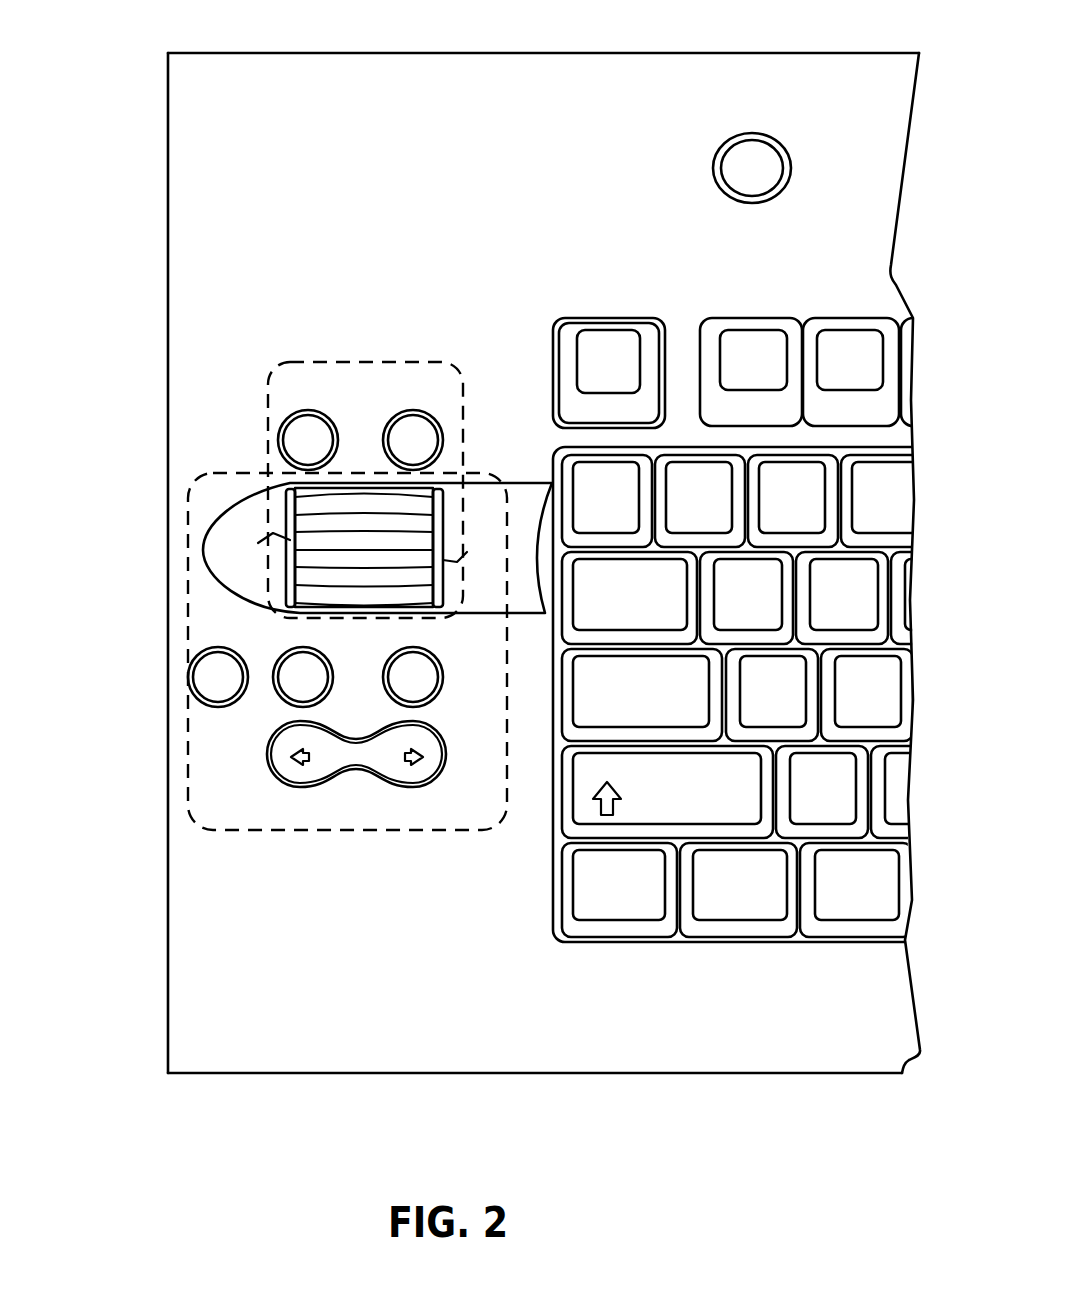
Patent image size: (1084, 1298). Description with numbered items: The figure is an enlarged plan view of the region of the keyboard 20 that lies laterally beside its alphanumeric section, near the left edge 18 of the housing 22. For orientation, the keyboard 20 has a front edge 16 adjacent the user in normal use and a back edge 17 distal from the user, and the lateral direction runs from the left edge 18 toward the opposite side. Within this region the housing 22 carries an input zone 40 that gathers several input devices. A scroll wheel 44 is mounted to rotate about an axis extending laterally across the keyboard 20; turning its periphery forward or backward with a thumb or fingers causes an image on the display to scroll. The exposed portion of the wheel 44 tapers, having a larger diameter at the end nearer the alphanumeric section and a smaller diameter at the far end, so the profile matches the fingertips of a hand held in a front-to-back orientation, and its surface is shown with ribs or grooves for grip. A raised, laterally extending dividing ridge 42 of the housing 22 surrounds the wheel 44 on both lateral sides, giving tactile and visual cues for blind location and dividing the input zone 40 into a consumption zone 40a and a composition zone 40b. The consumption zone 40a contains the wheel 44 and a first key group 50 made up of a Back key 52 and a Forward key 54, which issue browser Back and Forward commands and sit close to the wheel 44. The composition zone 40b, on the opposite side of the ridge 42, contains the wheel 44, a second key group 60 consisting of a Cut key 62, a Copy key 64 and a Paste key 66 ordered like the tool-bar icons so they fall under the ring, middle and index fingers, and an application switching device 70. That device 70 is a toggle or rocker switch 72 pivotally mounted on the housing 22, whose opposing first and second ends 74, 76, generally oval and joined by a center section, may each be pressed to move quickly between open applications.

The front edge 16 is at (620, 1073).
The back edge 17 is at (327, 53).
The left edge 18 is at (168, 963).
The keyboard 20 is at (478, 46).
The housing 22 is at (182, 310).
The input zone 40 is at (225, 425).
The consumption zone 40a is at (319, 362).
The composition zone 40b is at (188, 650).
The dividing ridge 42 is at (462, 512).
The scroll wheel 44 is at (310, 520).
The first key group 50 is at (357, 372).
The Back key 52 is at (285, 420).
The Forward key 54 is at (440, 428).
The second key group 60 is at (502, 750).
The Cut key 62 is at (230, 693).
The Copy key 64 is at (310, 693).
The Paste key 66 is at (423, 680).
The application switching device 70 is at (320, 848).
The toggle switch 72 is at (410, 722).
The first end 74 is at (287, 783).
The second end 76 is at (420, 778).